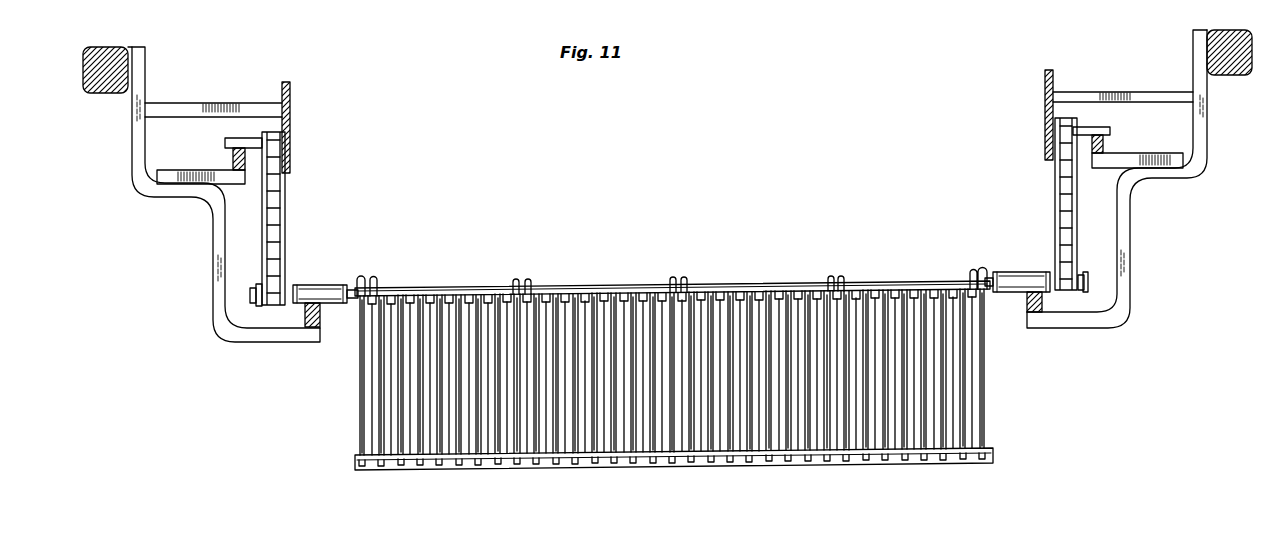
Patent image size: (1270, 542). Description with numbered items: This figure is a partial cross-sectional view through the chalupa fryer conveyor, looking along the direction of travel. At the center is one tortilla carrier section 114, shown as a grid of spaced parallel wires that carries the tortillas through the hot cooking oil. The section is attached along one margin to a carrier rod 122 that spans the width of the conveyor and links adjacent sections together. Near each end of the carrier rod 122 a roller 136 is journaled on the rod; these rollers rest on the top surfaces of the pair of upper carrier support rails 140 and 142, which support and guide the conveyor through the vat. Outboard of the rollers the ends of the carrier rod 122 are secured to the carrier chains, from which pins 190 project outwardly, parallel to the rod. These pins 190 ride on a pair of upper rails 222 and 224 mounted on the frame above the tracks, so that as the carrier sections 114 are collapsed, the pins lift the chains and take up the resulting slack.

The tortilla carrier section 114 is at (708, 357).
The carrier rod 122 is at (918, 283).
The roller 136 is at (1021, 278).
The upper carrier support rail 140 is at (1029, 306).
The upper carrier support rail 142 is at (322, 329).
The pin 190 is at (242, 138).
The upper rail 222 is at (1104, 145).
The upper rail 224 is at (233, 158).